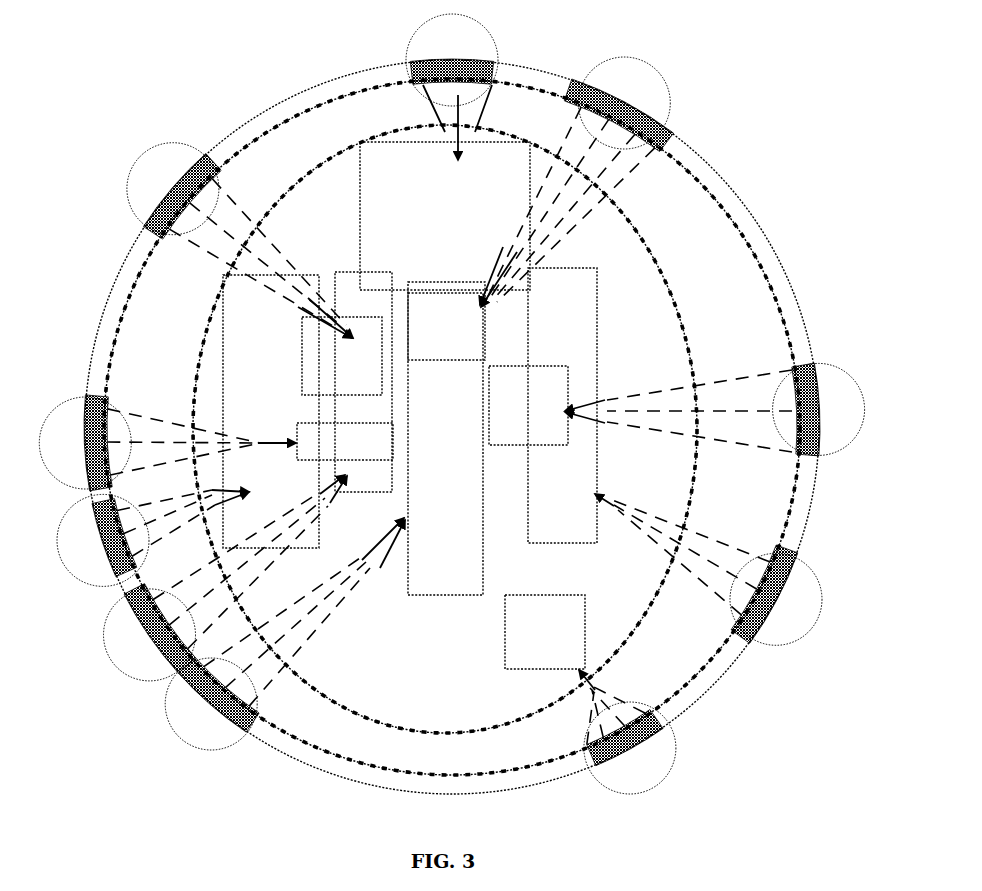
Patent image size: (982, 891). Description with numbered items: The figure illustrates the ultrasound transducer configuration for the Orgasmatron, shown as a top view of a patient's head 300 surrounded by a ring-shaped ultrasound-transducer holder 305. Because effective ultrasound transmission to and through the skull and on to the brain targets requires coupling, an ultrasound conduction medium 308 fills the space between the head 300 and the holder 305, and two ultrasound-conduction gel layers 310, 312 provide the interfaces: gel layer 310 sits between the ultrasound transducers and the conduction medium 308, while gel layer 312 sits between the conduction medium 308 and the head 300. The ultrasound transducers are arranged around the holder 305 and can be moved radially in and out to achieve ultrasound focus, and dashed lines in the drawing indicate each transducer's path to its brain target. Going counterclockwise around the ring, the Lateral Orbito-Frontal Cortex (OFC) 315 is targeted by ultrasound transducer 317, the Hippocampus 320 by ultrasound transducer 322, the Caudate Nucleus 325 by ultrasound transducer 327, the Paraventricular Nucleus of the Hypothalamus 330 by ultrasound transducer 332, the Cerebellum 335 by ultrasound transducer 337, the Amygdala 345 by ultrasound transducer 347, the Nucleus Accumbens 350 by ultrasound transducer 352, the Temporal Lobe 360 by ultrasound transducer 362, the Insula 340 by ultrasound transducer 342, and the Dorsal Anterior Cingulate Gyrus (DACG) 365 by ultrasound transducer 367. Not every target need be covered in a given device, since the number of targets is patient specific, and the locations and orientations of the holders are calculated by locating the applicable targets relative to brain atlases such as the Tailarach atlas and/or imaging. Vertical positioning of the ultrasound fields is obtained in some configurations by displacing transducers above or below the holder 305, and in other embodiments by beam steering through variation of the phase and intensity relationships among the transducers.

The head 300 is at (327, 185).
The ultrasound-transducer holder 305 is at (523, 68).
The ultrasound conduction medium 308 is at (350, 117).
The ultrasound-conduction gel layer 310 is at (673, 153).
The ultrasound-conduction gel layer 312 is at (627, 213).
The Lateral Orbito-Frontal Cortex (OFC) 315 is at (550, 603).
The ultrasound transducer 317 is at (610, 757).
The Hippocampus 320 is at (580, 280).
The ultrasound transducer 322 is at (778, 605).
The Caudate Nucleus 325 is at (568, 378).
The ultrasound transducer 327 is at (808, 360).
The Paraventricular Nucleus of the Hypothalamus 330 is at (478, 327).
The ultrasound transducer 332 is at (627, 97).
The Cerebellum 335 is at (433, 163).
The ultrasound transducer 337 is at (493, 62).
The Insula 340 is at (352, 285).
The ultrasound transducer 342 is at (130, 608).
The Amygdala 345 is at (327, 340).
The ultrasound transducer 347 is at (172, 195).
The Nucleus Accumbens 350 is at (255, 383).
The ultrasound transducer 352 is at (85, 430).
The Temporal Lobe 360 is at (257, 353).
The ultrasound transducer 362 is at (95, 535).
The Dorsal Anterior Cingulate Gyrus (DACG) 365 is at (400, 528).
The ultrasound transducer 367 is at (237, 740).